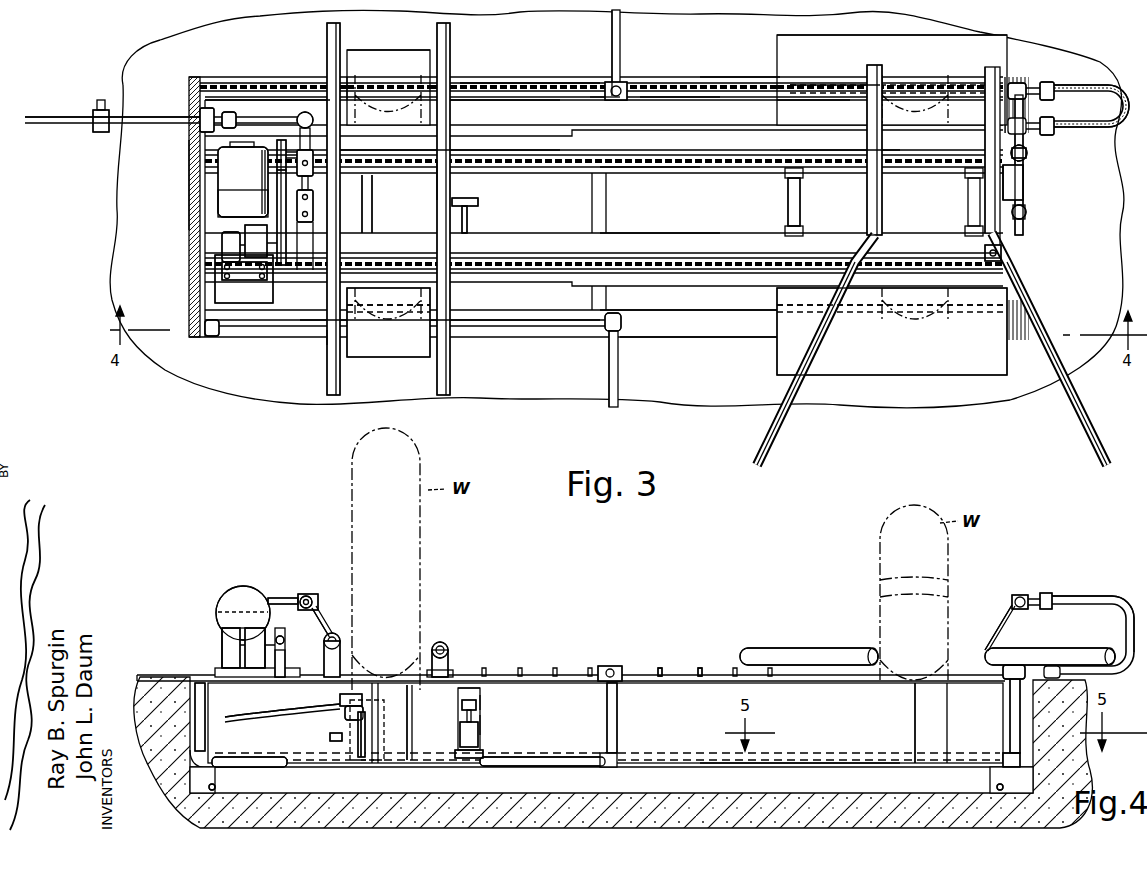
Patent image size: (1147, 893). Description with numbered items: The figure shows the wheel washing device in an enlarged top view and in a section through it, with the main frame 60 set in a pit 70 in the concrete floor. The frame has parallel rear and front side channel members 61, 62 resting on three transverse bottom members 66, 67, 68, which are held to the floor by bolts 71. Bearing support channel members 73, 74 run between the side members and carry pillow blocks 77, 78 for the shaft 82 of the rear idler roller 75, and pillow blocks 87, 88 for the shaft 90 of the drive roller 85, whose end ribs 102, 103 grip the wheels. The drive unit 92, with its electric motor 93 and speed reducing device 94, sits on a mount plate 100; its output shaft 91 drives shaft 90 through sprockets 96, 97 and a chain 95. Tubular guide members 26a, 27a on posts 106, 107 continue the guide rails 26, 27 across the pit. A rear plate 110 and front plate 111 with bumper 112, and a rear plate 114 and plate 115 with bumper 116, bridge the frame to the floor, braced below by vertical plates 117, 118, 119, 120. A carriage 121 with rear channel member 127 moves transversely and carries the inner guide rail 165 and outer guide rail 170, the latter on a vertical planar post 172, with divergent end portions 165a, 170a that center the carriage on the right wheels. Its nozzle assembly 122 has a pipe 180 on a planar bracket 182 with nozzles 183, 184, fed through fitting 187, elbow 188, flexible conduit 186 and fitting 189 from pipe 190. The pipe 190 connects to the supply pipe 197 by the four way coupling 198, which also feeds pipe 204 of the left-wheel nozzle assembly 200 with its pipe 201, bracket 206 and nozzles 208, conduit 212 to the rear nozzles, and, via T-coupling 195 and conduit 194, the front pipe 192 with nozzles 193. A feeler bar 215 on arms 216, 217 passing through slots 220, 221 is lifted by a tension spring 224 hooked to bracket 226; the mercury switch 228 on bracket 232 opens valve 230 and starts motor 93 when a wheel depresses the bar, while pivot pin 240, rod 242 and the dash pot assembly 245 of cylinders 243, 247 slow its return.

In FIG. 3, the pipe 204 is at (243, 108).
In FIG. 3, the angular bumper 112 is at (350, 82).
In FIG. 3, the front plate 111 is at (390, 57).
In FIG. 3, the conduit 194 is at (620, 42).
In FIG. 3, the front side channel member 62 is at (545, 80).
In FIG. 3, the main frame 60 is at (675, 90).
In FIG. 4, the main frame 60 is at (290, 768).
In FIG. 3, the pipe 190 is at (1013, 80).
In FIG. 4, the pipe 190 is at (1010, 708).
In FIG. 3, the angular bumper 116 is at (827, 80).
In FIG. 3, the plate 115 is at (940, 50).
In FIG. 3, the outer horizontal guide rail 170 is at (1005, 62).
In FIG. 3, the fitting 189 is at (1048, 84).
In FIG. 4, the fitting 189 is at (1005, 690).
In FIG. 3, the flexible conduit 186 is at (1130, 88).
In FIG. 4, the flexible conduit 186 is at (1097, 595).
In FIG. 3, the liquid supply pipe 197 is at (148, 116).
In FIG. 3, the four way coupling 198 is at (197, 112).
In FIG. 3, the valve 230 is at (100, 128).
In FIG. 3, the bearing support channel member 73 is at (293, 118).
In FIG. 3, the pillow block 87 is at (312, 125).
In FIG. 3, the vertical plate 119 is at (450, 104).
In FIG. 3, the transverse channel shaped bottom member 67 is at (606, 328).
In FIG. 4, the transverse channel shaped bottom member 67 is at (615, 787).
In FIG. 3, the T-coupling 195 is at (606, 98).
In FIG. 3, the vertical plate 120 is at (776, 108).
In FIG. 3, the elbow 188 is at (1032, 100).
In FIG. 3, the fitting 187 is at (1056, 122).
In FIG. 4, the fitting 187 is at (1052, 594).
In FIG. 3, the sprocket 97 is at (280, 143).
In FIG. 4, the sprocket 97 is at (286, 640).
In FIG. 3, the electric motor 93 is at (218, 162).
In FIG. 4, the electric motor 93 is at (240, 590).
In FIG. 3, the rib 102 is at (420, 148).
In FIG. 3, the rib 103 is at (790, 146).
In FIG. 3, the pillow block 88 is at (1027, 144).
In FIG. 3, the nozzle 183 is at (1027, 160).
In FIG. 3, the pipe 180 is at (1025, 170).
In FIG. 3, the rear channel member 127 is at (1025, 180).
In FIG. 3, the planar bracket 182 is at (1025, 190).
In FIG. 4, the planar bracket 182 is at (1006, 648).
In FIG. 3, the conduit 212 is at (620, 378).
In FIG. 3, the chain 95 is at (277, 180).
In FIG. 4, the chain 95 is at (285, 672).
In FIG. 3, the drive roller shaft 90 is at (318, 172).
In FIG. 3, the tubular guide member 26a is at (326, 336).
In FIG. 4, the tubular guide member 26a is at (333, 633).
In FIG. 3, the drive roller 85 is at (650, 168).
In FIG. 3, the nozzle 184 is at (1027, 210).
In FIG. 4, the nozzle 184 is at (1008, 600).
In FIG. 3, the drive unit 92 is at (218, 200).
In FIG. 4, the drive unit 92 is at (212, 612).
In FIG. 3, the output shaft 91 is at (270, 230).
In FIG. 4, the output shaft 91 is at (268, 642).
In FIG. 3, the feeler bar 215 is at (478, 203).
In FIG. 4, the feeler bar 215 is at (366, 710).
In FIG. 3, the rear idler roller 75 is at (660, 233).
In FIG. 3, the carriage 121 is at (785, 212).
In FIG. 3, the inner horizontal guide rail 165 is at (882, 214).
In FIG. 3, the bearing support channel member 74 is at (1008, 228).
In FIG. 3, the arm 217 is at (374, 228).
In FIG. 4, the arm 217 is at (352, 695).
In FIG. 3, the arm 216 is at (470, 228).
In FIG. 3, the pillow block 78 is at (1002, 258).
In FIG. 3, the speed reducing device 94 is at (222, 245).
In FIG. 4, the speed reducing device 94 is at (222, 642).
In FIG. 3, the idler roller shaft 82 is at (315, 243).
In FIG. 3, the mount plate 100 is at (215, 290).
In FIG. 3, the sprocket 96 is at (270, 280).
In FIG. 3, the pillow block 77 is at (300, 270).
In FIG. 3, the vertical brace plate 117 is at (440, 296).
In FIG. 4, the vertical brace plate 117 is at (408, 703).
In FIG. 3, the vertical brace plate 118 is at (778, 297).
In FIG. 4, the vertical brace plate 118 is at (908, 717).
In FIG. 3, the transverse channel shaped bottom member 66 is at (212, 337).
In FIG. 4, the transverse channel shaped bottom member 66 is at (220, 772).
In FIG. 3, the rear side channel member 61 is at (668, 306).
In FIG. 4, the rear side channel member 61 is at (812, 763).
In FIG. 3, the pit 70 is at (738, 332).
In FIG. 3, the guide rail 26 is at (326, 366).
In FIG. 3, the rear plate 110 is at (382, 352).
In FIG. 3, the guide rail 27 is at (450, 370).
In FIG. 3, the rear plate 114 is at (930, 370).
In FIG. 3, the divergent end portion 165a is at (762, 440).
In FIG. 3, the divergent end portion 170a is at (1092, 440).
In FIG. 4, the nozzle assembly 200 is at (285, 596).
In FIG. 4, the pipe 201 is at (307, 594).
In FIG. 4, the nozzles 208 is at (314, 598).
In FIG. 4, the bracket 206 is at (322, 612).
In FIG. 4, the post 106 is at (341, 650).
In FIG. 4, the tubular guide member 27a is at (446, 648).
In FIG. 4, the post 107 is at (452, 660).
In FIG. 4, the pipe 192 is at (618, 667).
In FIG. 4, the nozzles 193 is at (660, 667).
In FIG. 4, the nozzle assembly 122 is at (1022, 595).
In FIG. 4, the vertical planar post 172 is at (985, 656).
In FIG. 4, the mercury switch 228 is at (340, 704).
In FIG. 4, the slot 220 is at (482, 690).
In FIG. 4, the rod 242 is at (462, 712).
In FIG. 4, the pivot pin 240 is at (480, 702).
In FIG. 4, the bracket 232 is at (350, 717).
In FIG. 4, the tension spring 224 is at (368, 732).
In FIG. 4, the dash pot assembly 245 is at (460, 728).
In FIG. 4, the upper telescoping cylinder 243 is at (480, 724).
In FIG. 4, the slot 221 is at (352, 735).
In FIG. 4, the cylinder 247 is at (462, 749).
In FIG. 4, the bracket 226 is at (365, 767).
In FIG. 4, the bolt 71 is at (1028, 783).
In FIG. 4, the transverse channel shaped bottom member 68 is at (992, 775).